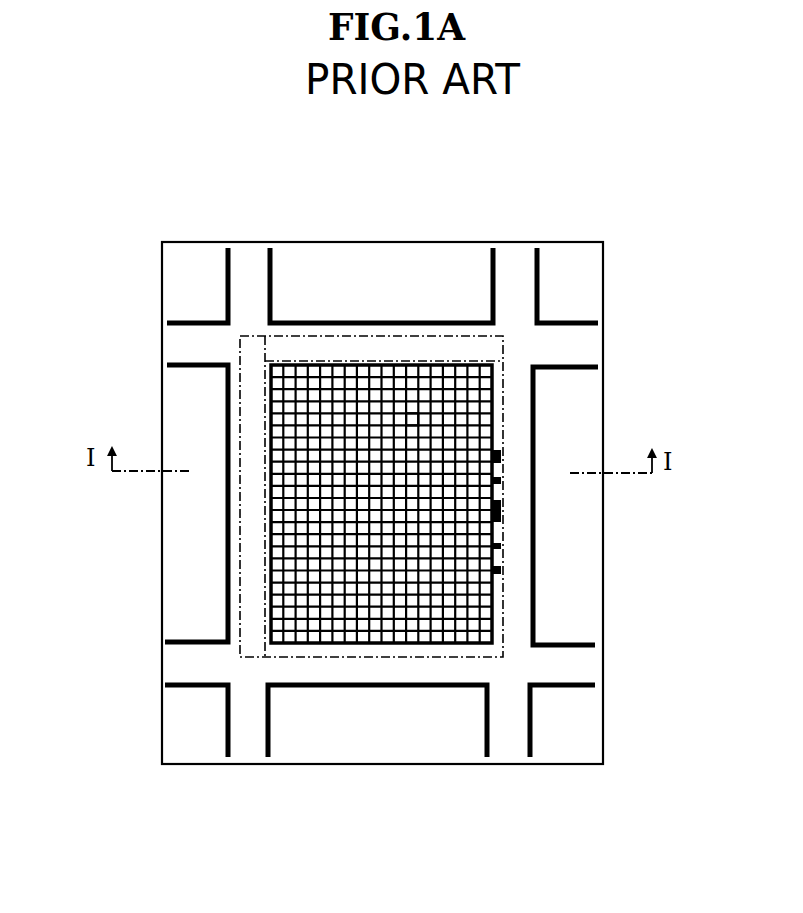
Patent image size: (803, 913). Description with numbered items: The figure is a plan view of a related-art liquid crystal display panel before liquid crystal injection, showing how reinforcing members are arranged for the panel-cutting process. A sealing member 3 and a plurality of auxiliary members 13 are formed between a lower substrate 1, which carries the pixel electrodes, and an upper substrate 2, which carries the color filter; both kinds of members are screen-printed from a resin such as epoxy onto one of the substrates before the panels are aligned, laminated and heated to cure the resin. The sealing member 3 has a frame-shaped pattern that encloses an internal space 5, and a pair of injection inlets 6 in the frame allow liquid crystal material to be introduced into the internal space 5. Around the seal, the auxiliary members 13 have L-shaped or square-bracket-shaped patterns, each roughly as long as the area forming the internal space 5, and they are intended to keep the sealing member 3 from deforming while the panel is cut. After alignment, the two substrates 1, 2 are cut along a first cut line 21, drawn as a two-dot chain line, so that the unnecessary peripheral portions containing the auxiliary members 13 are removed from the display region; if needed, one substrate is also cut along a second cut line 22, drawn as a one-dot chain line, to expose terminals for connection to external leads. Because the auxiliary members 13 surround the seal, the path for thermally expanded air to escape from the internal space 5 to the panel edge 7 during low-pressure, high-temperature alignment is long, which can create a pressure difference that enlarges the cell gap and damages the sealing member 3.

The lower substrate 1 is at (431, 503).
The upper substrate 2 is at (431, 503).
The sealing member 3 is at (384, 487).
The internal space 5 is at (407, 423).
The injection inlets 6 is at (501, 480).
The panel edge 7 is at (603, 672).
The auxiliary members 13 is at (343, 323).
The first cut line 21 is at (298, 337).
The second cut line 22 is at (383, 361).